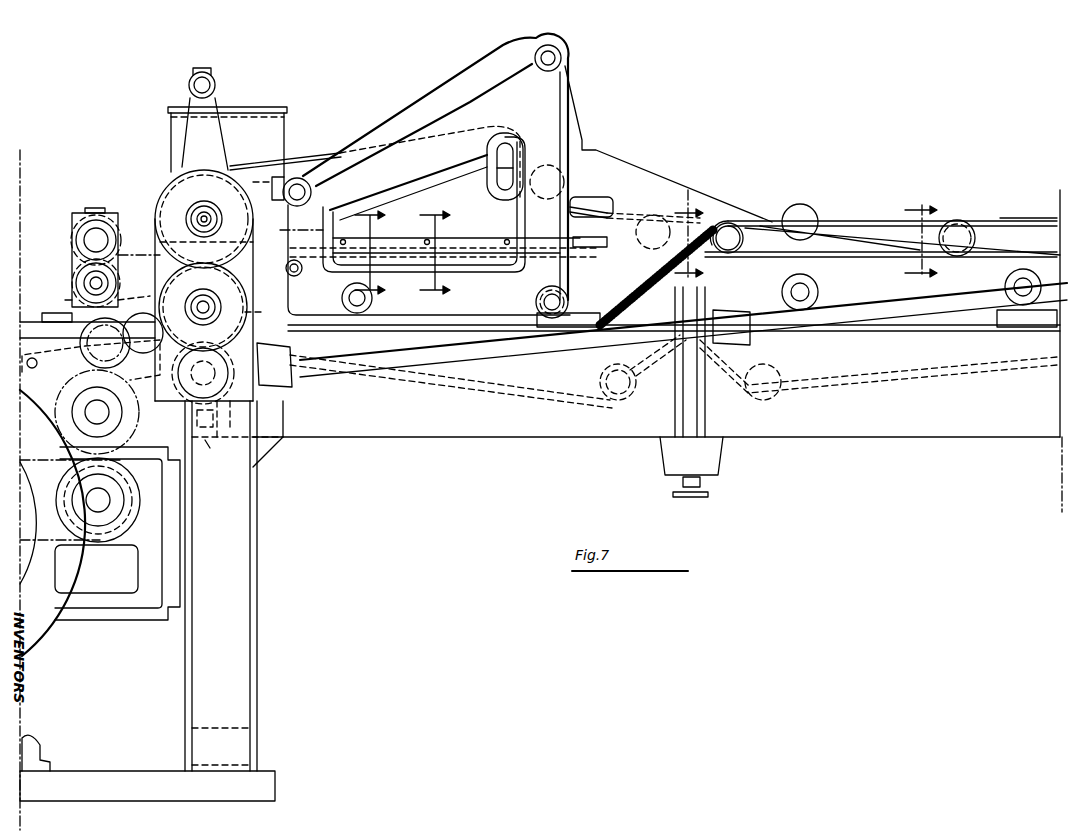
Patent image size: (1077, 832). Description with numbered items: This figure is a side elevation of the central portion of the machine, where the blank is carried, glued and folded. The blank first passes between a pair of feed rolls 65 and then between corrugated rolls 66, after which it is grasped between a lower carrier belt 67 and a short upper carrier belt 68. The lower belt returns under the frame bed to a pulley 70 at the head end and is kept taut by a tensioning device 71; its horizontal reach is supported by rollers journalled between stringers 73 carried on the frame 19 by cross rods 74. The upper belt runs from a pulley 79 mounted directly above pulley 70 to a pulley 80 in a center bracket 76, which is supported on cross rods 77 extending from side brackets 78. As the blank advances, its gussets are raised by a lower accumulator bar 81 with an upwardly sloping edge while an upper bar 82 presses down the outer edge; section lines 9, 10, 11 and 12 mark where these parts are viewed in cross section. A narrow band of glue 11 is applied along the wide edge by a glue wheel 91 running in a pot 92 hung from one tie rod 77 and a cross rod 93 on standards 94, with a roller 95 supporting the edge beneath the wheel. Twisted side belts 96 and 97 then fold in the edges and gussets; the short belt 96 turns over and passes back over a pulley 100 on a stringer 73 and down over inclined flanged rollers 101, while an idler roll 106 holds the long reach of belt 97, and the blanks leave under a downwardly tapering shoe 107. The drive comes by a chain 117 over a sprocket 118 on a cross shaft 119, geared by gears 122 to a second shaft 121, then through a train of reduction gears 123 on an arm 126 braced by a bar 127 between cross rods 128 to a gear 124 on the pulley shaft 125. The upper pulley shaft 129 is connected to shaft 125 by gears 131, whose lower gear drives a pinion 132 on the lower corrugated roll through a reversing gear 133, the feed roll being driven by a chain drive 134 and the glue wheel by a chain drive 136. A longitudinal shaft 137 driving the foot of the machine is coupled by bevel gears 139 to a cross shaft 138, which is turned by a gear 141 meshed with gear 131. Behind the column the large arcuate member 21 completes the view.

The narrow side edge 9 is at (370, 253).
The section line 10 is at (435, 253).
The band of glue 11 is at (689, 232).
The section line 12 is at (921, 243).
The frame 19 is at (427, 428).
The arcuate guide 21 is at (35, 635).
The feed rolls 65 is at (78, 265).
The corrugated rolls 66 is at (153, 252).
The lower carrier belt 67 is at (880, 390).
The upper carrier belt 68 is at (298, 158).
The pulley 70 is at (293, 301).
The tensioning device 71 is at (675, 390).
The stringers 73 is at (868, 320).
The cross rods 74 is at (792, 292).
The center bracket 76 is at (622, 165).
The cross rods 77 is at (562, 56).
The side brackets 78 is at (553, 100).
The pulley 79 is at (232, 182).
The pulley 80 is at (655, 215).
The lower accumulator bar 81 is at (618, 230).
The upper accumulator bar 82 is at (468, 238).
The glue wheel 91 is at (285, 228).
The glue pot 92 is at (270, 110).
The cross rod 93 is at (208, 82).
The standards 94 is at (222, 100).
The roller 95 is at (253, 313).
The side belt 96 is at (863, 223).
The side belt 97 is at (1047, 225).
The pulley 100 is at (957, 228).
The inclined flanged rollers 101 is at (733, 250).
The idler roll 106 is at (833, 195).
The shoe 107 is at (817, 248).
The chain 117 is at (37, 538).
The sprocket 118 is at (118, 520).
The cross shaft 119 is at (100, 515).
The second shaft 121 is at (100, 414).
The gears 122 is at (70, 457).
The train of reduction gears 123 is at (126, 356).
The gear 124 is at (203, 307).
The pulley shaft 125 is at (203, 312).
The arm 126 is at (65, 300).
The bar 127 is at (110, 378).
The cross rods 128 is at (32, 370).
The upper pulley shaft 129 is at (200, 215).
The gears 131 is at (235, 240).
The pinion 132 is at (155, 232).
The reversing gear 133 is at (150, 298).
The chain drive 134 is at (152, 282).
The chain drive 136 is at (204, 285).
The longitudinal shaft 137 is at (378, 365).
The cross shaft 138 is at (219, 451).
The bevel gears 139 is at (223, 420).
The gear 141 is at (211, 418).